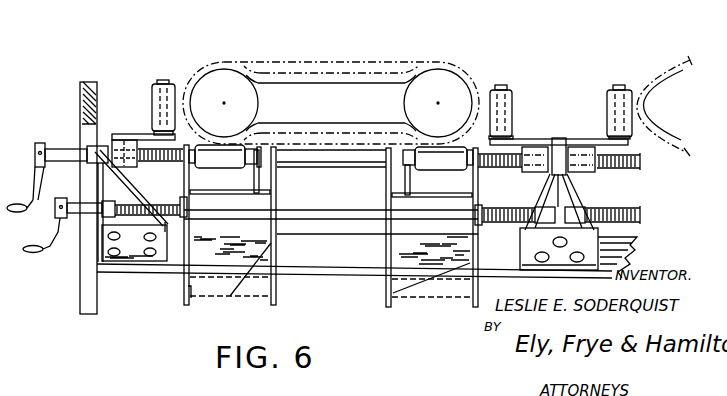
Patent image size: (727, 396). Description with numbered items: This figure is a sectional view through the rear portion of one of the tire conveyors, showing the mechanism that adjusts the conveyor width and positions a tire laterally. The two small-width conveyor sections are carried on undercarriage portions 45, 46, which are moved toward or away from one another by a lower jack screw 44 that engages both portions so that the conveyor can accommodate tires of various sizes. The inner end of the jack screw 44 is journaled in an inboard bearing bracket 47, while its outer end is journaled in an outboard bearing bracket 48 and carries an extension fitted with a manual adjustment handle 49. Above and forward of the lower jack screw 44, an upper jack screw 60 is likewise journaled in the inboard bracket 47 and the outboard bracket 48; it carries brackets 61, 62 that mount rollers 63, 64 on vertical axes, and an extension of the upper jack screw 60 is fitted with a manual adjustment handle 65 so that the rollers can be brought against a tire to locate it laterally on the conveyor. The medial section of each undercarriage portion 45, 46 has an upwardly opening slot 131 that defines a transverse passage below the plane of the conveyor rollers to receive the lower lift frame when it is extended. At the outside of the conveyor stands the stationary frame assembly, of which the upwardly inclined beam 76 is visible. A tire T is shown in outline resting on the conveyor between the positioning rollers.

The inclined beam 76 is at (80, 97).
The manual adjustment handle 65 is at (16, 211).
The roller 64 is at (152, 92).
The bracket 62 is at (115, 135).
The manual adjustment handle 49 is at (36, 252).
The outboard bearing bracket 48 is at (133, 253).
The upwardly opening slot 131 is at (190, 292).
The upper jack screw 60 is at (323, 165).
The jack screw 44 is at (312, 212).
The undercarriage portion 45 is at (273, 244).
The undercarriage portion 46 is at (380, 253).
The bracket 61 is at (568, 140).
The roller 63 is at (607, 96).
The inboard bearing bracket 47 is at (560, 186).
The tire T is at (455, 66).